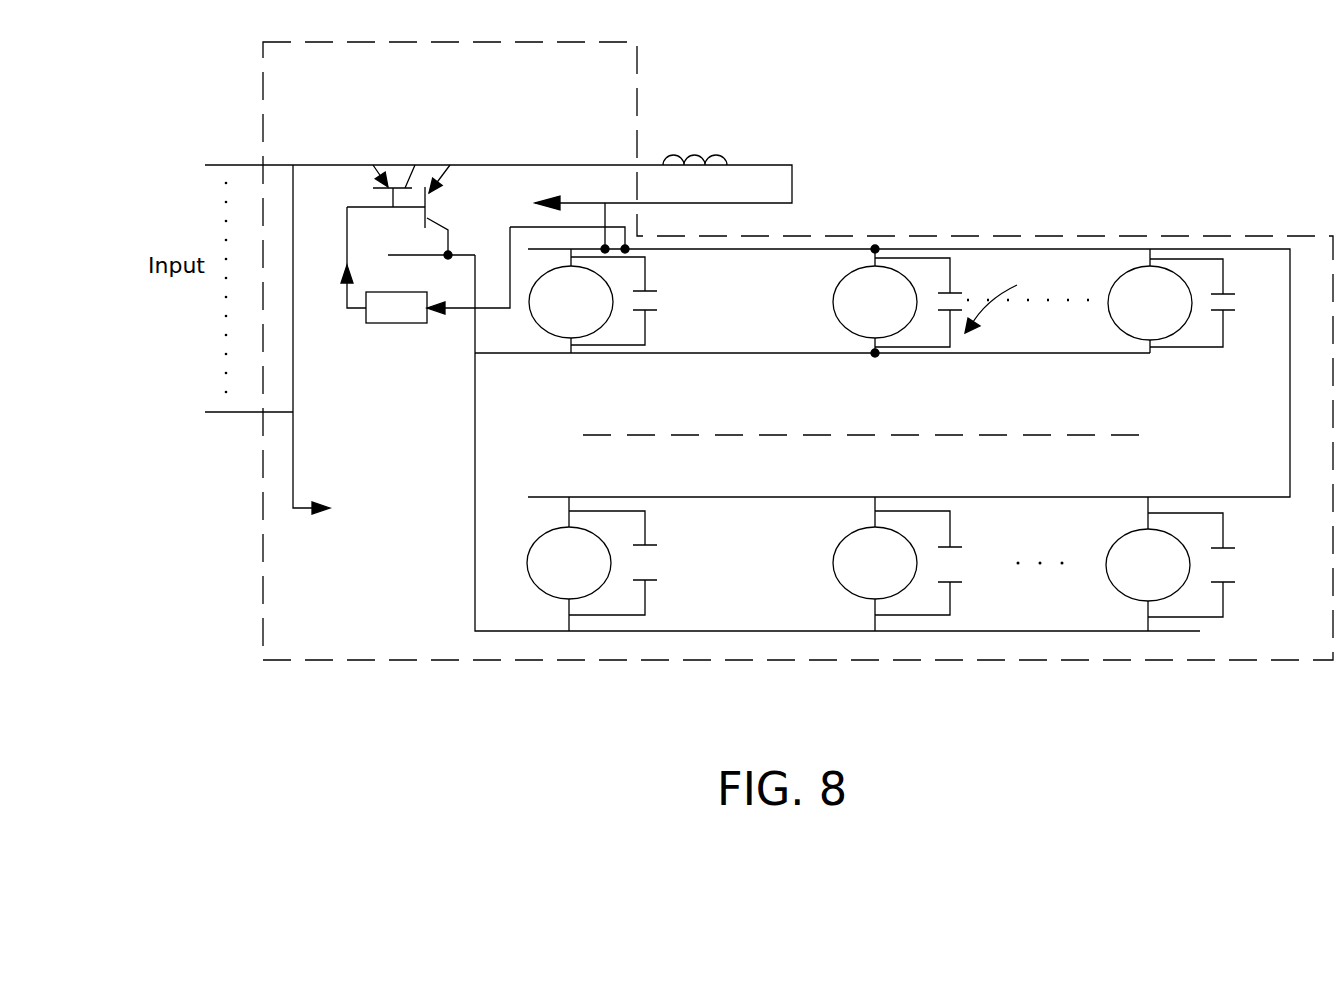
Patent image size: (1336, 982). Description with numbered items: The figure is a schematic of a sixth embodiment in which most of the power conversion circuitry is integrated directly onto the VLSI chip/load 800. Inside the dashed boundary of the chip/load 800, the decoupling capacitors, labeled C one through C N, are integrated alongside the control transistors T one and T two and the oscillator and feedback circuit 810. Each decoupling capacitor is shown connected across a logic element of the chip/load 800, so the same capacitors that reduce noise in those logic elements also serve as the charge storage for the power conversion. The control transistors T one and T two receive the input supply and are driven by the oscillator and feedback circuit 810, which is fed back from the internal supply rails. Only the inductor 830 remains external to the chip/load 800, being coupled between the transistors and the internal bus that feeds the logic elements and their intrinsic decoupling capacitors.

The VLSI chip/load 800 is at (722, 660).
The oscillator and feedback circuit 810 is at (392, 323).
The inductor 830 is at (752, 132).